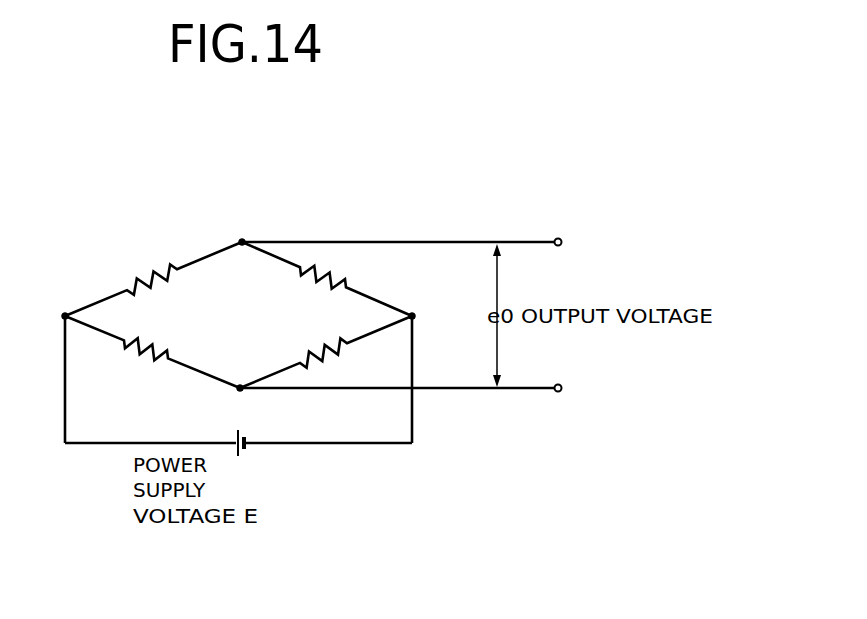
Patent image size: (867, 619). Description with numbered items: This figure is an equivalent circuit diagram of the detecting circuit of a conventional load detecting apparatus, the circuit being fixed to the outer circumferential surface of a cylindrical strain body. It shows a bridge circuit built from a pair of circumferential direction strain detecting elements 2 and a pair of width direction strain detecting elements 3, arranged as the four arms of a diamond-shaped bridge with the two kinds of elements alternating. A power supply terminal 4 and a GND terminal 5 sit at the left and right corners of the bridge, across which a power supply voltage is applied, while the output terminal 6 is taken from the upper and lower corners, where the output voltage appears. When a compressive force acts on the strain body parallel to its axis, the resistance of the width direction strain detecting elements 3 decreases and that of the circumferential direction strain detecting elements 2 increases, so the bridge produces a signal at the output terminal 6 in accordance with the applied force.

The circumferential direction strain detecting element 2 is at (320, 268).
The width direction strain detecting element 3 is at (156, 268).
The power supply terminal 4 is at (65, 316).
The GND terminal 5 is at (412, 316).
The output terminal 6 is at (242, 242).